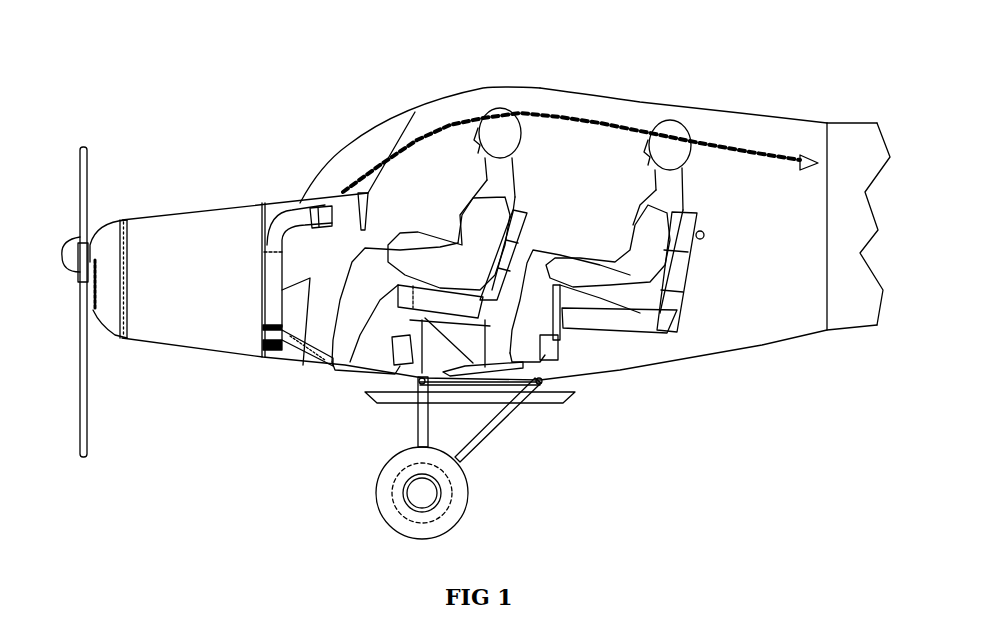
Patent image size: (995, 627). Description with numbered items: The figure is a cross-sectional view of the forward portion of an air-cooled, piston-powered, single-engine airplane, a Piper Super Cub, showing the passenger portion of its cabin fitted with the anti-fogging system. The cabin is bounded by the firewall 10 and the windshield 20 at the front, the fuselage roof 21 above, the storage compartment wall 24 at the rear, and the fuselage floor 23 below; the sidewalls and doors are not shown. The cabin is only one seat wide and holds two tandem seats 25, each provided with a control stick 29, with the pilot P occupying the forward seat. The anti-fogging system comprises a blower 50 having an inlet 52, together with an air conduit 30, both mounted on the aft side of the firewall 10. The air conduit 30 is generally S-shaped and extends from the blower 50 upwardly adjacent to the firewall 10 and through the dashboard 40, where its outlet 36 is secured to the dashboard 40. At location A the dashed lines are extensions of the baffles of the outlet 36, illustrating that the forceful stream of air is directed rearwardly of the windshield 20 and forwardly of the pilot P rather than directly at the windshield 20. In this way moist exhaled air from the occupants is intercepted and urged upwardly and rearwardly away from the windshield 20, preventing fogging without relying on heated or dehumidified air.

The firewall 10 is at (257, 264).
The windshield 20 is at (414, 132).
The fuselage roof 21 is at (668, 78).
The fuselage floor 23 is at (499, 360).
The storage compartment wall 24 is at (867, 205).
The tandem seats 25 is at (611, 211).
The control stick 29 is at (491, 367).
The air conduit 30 is at (295, 377).
The outlet 36 is at (300, 234).
The dashboard 40 is at (347, 144).
The blower 50 is at (266, 388).
The inlet 52 is at (264, 385).
The location A is at (522, 150).
The pilot P is at (426, 205).